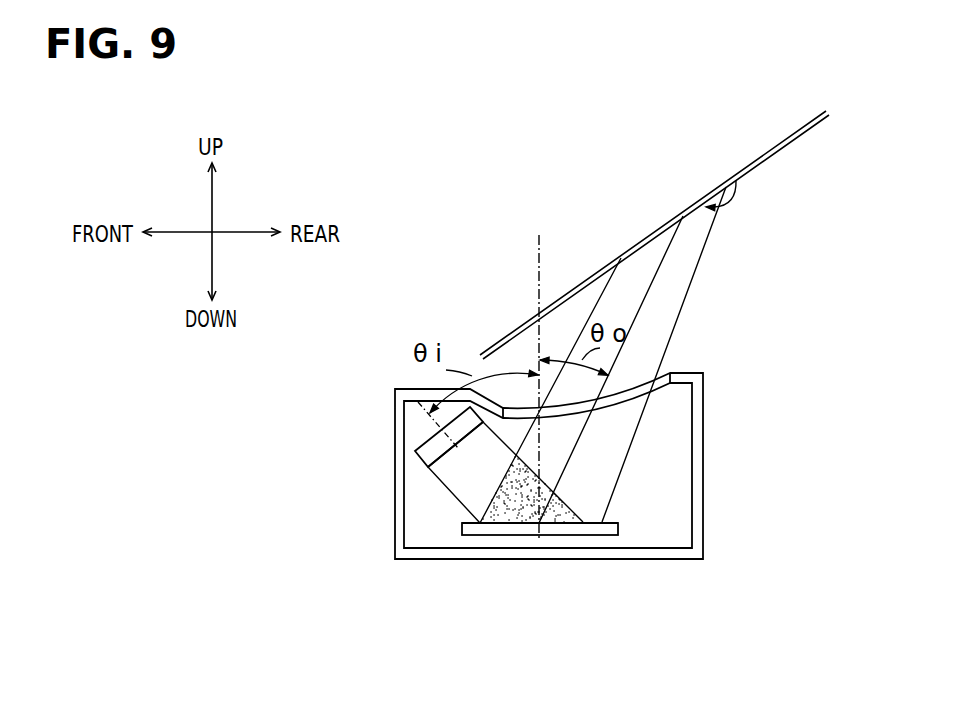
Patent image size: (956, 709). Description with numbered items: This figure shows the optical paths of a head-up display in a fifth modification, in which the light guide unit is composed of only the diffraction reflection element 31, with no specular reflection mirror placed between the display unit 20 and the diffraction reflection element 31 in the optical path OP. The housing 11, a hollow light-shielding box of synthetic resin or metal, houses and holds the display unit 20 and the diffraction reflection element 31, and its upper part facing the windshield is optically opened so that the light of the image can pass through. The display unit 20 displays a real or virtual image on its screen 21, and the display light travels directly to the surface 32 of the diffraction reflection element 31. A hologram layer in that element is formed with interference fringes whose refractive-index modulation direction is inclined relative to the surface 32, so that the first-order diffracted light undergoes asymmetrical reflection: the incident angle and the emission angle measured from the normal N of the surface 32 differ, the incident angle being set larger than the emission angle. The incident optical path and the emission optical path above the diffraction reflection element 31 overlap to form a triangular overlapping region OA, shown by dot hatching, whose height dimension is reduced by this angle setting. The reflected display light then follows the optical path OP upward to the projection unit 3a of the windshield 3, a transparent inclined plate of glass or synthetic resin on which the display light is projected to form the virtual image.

The windshield 3 is at (774, 148).
The projection unit 3a is at (726, 187).
The housing 11 is at (703, 410).
The display unit 20 is at (430, 438).
The screen 21 is at (454, 456).
The diffraction reflection element 31 is at (580, 536).
The surface 32 is at (580, 519).
The overlapping region OA is at (500, 514).
The optical path OP is at (623, 467).
The normal N is at (538, 264).